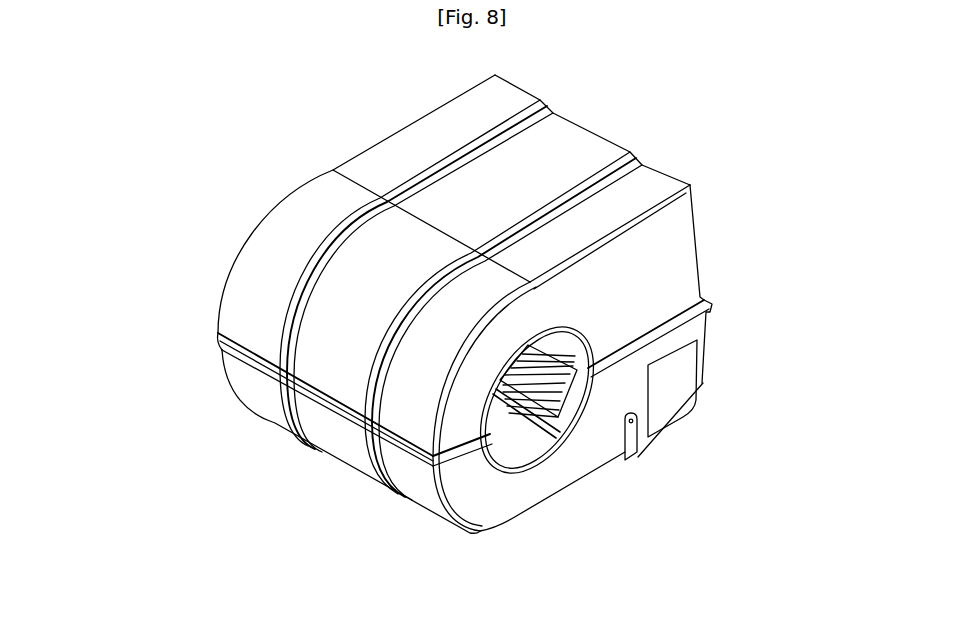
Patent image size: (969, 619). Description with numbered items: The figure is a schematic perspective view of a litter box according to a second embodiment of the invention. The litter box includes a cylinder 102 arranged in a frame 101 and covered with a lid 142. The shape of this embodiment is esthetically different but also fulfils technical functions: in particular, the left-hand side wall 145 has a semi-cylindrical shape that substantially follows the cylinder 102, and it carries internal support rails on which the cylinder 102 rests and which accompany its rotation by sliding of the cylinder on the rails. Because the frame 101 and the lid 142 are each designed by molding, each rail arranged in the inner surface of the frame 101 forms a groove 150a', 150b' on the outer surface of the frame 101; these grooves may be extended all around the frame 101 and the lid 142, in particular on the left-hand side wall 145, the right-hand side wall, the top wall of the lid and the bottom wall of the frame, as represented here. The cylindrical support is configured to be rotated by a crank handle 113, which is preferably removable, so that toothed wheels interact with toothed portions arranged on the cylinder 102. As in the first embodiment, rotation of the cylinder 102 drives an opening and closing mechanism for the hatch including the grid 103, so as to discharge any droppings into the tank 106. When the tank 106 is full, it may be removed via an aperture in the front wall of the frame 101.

The frame 101 is at (505, 512).
The cylinder 102 is at (535, 440).
The grid 103 is at (562, 378).
The tank 106 is at (686, 392).
The crank handle 113 is at (642, 462).
The lid 142 is at (380, 162).
The left-hand side wall 145 is at (235, 380).
The groove 150a' is at (405, 369).
The groove 150b' is at (316, 317).